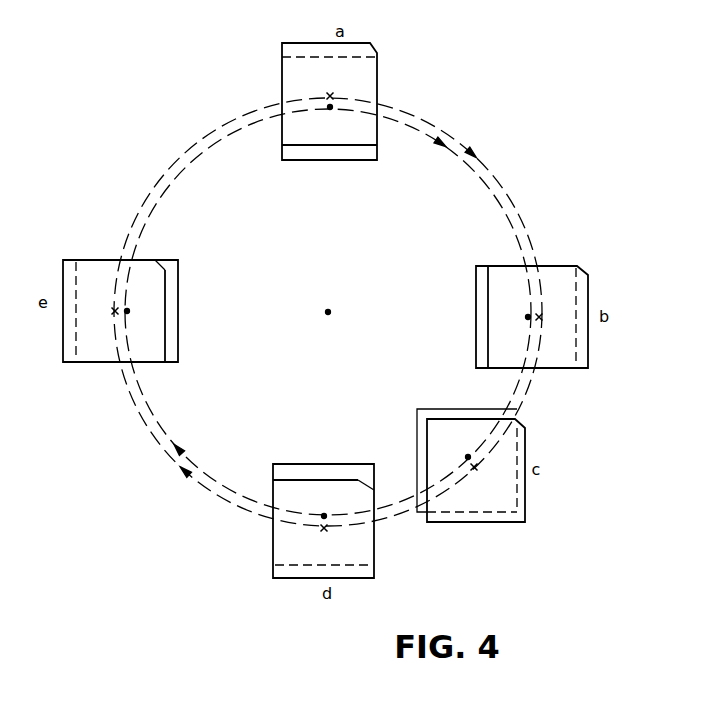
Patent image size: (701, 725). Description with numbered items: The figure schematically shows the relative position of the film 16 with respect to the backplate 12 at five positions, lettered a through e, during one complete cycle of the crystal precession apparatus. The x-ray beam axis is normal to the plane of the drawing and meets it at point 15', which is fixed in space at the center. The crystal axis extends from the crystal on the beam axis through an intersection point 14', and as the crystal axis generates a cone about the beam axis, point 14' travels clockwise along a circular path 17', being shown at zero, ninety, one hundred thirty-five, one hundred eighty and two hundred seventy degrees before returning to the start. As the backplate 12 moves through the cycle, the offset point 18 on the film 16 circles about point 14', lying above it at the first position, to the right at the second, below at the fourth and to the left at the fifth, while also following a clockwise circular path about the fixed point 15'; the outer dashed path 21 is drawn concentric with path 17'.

The backplate 12 is at (364, 162).
The intersection point of crystal axis 14' is at (328, 312).
The intersection point of x-ray beam axis 15' is at (360, 304).
The film 16 is at (373, 49).
The circular path 17' is at (328, 312).
The offset point 18 is at (332, 95).
The outer circular path 21 is at (515, 210).